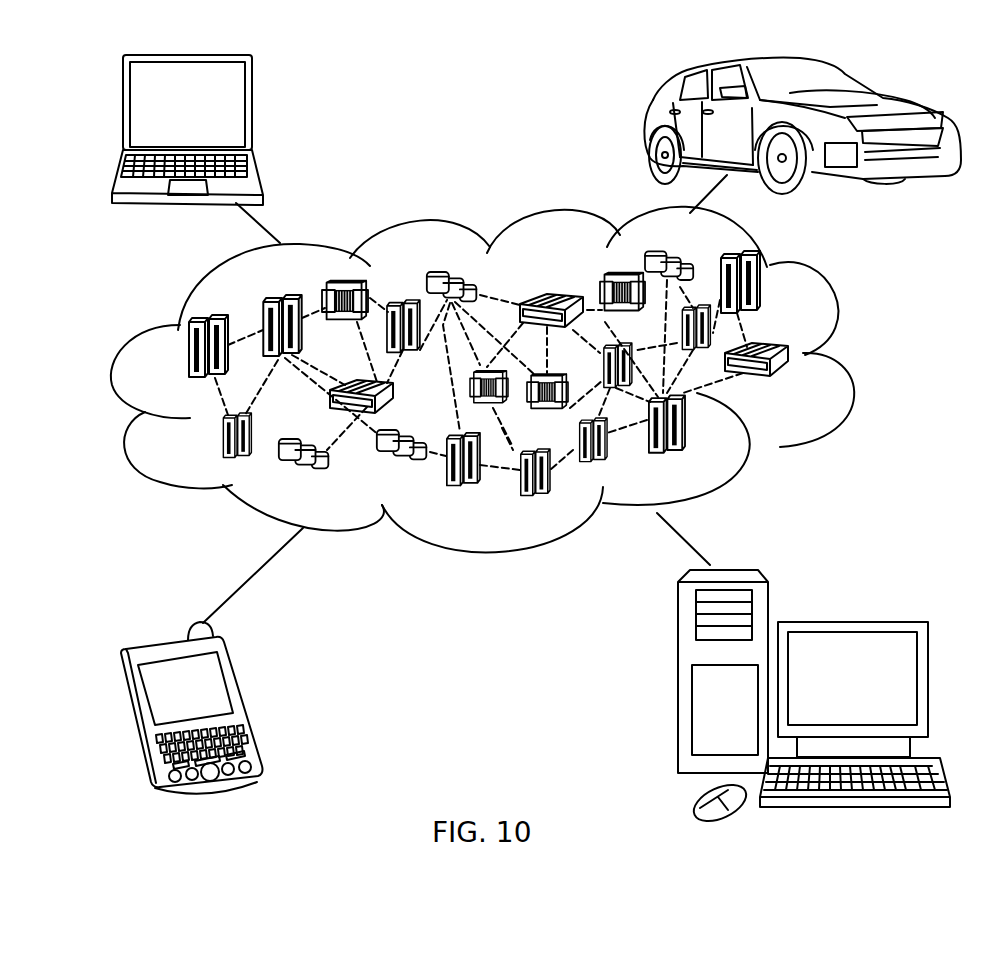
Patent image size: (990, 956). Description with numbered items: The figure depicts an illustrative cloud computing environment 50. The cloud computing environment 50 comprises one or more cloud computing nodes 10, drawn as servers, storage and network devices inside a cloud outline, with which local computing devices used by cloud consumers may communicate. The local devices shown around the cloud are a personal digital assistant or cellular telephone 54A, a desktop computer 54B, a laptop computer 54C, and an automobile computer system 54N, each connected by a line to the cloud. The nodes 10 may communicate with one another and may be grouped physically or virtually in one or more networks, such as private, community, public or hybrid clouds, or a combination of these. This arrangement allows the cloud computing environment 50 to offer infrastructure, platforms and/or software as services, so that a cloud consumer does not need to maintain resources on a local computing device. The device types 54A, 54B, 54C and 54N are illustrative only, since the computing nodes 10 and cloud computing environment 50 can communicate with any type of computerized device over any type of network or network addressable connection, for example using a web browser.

The cloud computing node 10 is at (801, 390).
The cloud computing environment 50 is at (508, 399).
The personal digital assistant (PDA) or cellular telephone 54A is at (247, 702).
The desktop computer 54B is at (851, 620).
The laptop computer 54C is at (252, 111).
The automobile computer system 54N is at (652, 127).